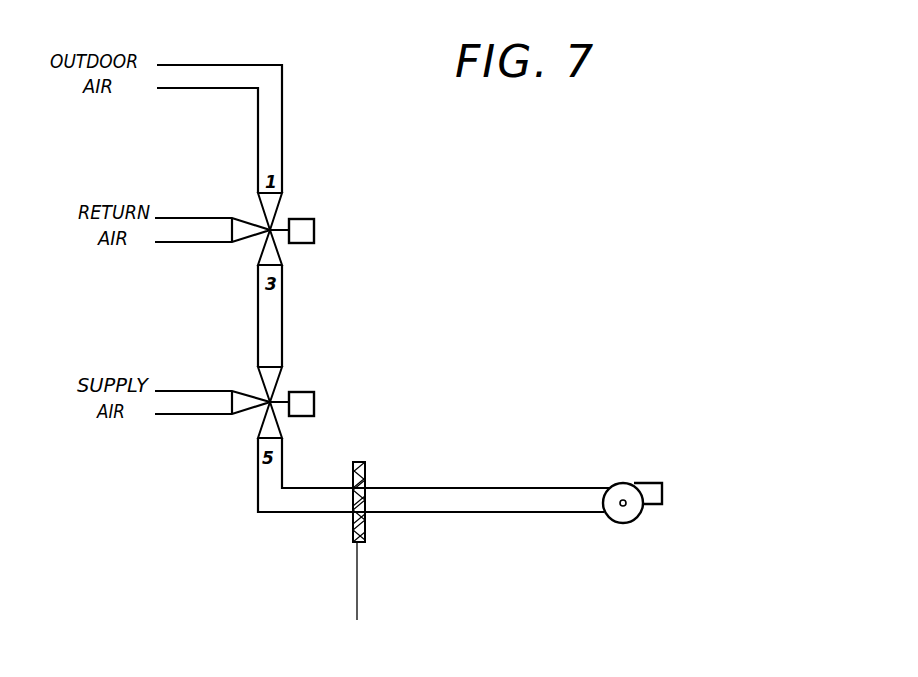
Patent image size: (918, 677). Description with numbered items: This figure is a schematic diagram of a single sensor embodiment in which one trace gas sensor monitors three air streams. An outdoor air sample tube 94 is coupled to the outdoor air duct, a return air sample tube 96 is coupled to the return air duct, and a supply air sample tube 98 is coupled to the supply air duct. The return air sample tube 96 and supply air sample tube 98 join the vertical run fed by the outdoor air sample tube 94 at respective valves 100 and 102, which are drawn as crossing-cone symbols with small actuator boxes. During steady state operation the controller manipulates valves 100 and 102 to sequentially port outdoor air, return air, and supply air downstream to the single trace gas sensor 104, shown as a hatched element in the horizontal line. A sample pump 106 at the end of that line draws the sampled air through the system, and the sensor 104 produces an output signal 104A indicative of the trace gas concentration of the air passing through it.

The outdoor air sample tube 94 is at (240, 64).
The return air sample tube 96 is at (190, 217).
The supply air sample tube 98 is at (203, 390).
The valve 100 is at (303, 218).
The valve 102 is at (302, 391).
The trace gas sensor 104 is at (358, 461).
The output signal 104A is at (357, 582).
The sample pump 106 is at (641, 483).